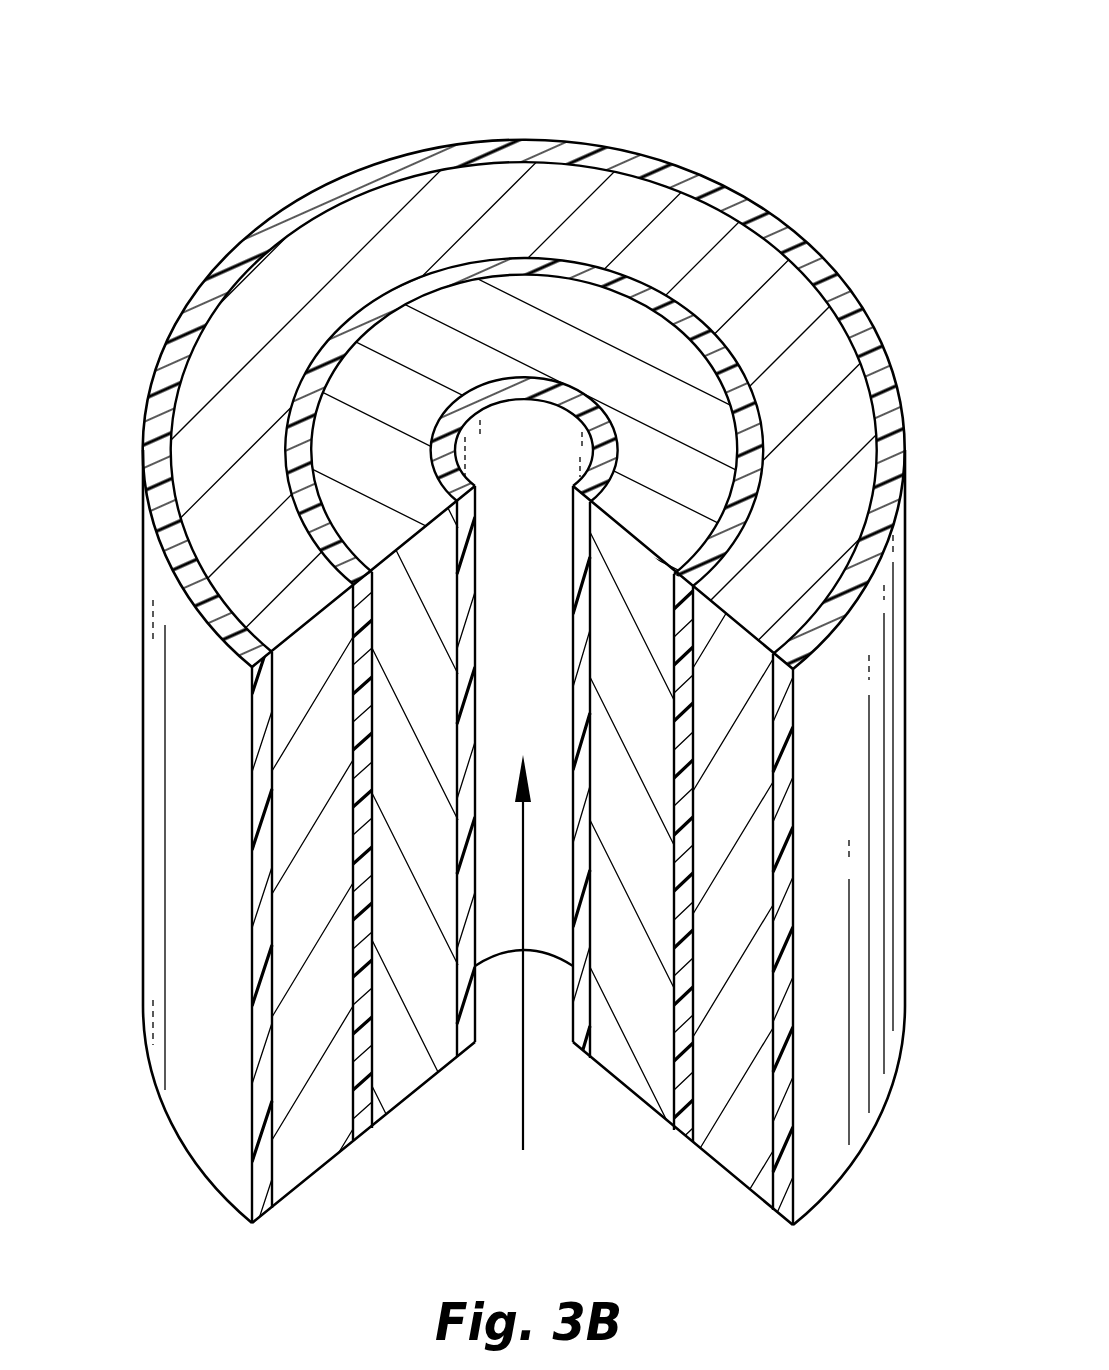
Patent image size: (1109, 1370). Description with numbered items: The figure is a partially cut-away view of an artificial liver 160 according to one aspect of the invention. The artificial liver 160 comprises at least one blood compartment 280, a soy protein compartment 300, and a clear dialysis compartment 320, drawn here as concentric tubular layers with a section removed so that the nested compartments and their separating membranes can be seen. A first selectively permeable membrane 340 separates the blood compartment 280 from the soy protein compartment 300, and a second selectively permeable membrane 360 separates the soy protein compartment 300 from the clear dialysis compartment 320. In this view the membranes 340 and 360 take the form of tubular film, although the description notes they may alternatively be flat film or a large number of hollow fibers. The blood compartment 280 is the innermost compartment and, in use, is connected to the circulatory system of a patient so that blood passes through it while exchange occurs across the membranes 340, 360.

The artificial liver 160 is at (146, 93).
The blood compartment 280 is at (540, 422).
The soy protein compartment 300 is at (665, 371).
The clear dialysis compartment 320 is at (824, 358).
The first selectively permeable membrane 340 is at (468, 1046).
The second selectively permeable membrane 360 is at (684, 1126).